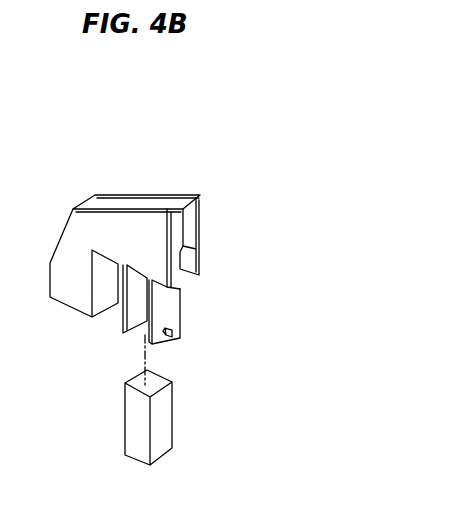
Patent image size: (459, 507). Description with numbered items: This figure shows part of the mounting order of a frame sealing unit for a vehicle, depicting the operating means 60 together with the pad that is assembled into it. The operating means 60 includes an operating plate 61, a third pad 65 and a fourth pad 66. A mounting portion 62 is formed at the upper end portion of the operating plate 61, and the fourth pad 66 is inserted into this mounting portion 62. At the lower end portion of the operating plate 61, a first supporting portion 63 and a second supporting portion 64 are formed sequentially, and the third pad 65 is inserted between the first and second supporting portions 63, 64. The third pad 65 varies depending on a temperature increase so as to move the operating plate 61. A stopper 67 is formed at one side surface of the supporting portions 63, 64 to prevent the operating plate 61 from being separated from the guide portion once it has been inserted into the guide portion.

The operating means 60 is at (131, 247).
The operating plate 61 is at (73, 242).
The mounting portion 62 is at (173, 210).
The first supporting portion 63 is at (130, 312).
The second supporting portion 64 is at (171, 303).
The third pad 65 is at (162, 427).
The fourth pad 66 is at (192, 215).
The stopper 67 is at (173, 335).